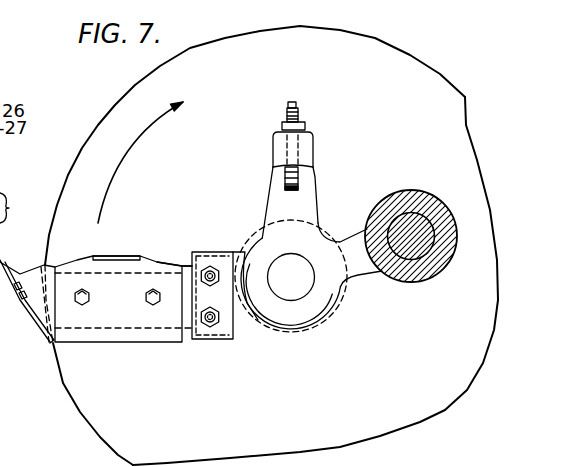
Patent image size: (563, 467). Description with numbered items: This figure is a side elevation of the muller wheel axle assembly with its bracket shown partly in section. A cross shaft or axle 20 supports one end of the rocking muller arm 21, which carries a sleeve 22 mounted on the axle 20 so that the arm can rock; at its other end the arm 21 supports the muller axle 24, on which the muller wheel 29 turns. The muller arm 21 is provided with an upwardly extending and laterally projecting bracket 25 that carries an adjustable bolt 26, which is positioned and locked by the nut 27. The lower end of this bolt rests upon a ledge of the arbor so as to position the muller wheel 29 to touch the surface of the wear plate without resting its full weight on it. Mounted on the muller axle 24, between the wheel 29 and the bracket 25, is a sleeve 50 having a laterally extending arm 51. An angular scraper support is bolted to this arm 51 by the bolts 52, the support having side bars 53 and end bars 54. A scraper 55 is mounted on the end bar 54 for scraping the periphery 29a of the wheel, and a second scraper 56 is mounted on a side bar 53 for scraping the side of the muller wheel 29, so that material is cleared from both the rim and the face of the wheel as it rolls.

The cross shaft or axle 20 is at (437, 274).
The rocking muller arm 21 is at (356, 239).
The sleeve 22 is at (416, 191).
The muller axle 24 is at (302, 290).
The bracket 25 is at (313, 181).
The adjustable bolt 26 is at (299, 109).
The nut 27 is at (305, 125).
The muller wheel 29 is at (130, 93).
The periphery 29a is at (67, 383).
The sleeve 50 is at (345, 292).
The laterally extending arm 51 is at (242, 316).
The bolts 52 is at (209, 328).
The side bars 53 is at (184, 264).
The end bars 54 is at (34, 268).
The scraper 55 is at (38, 331).
The scraper 56 is at (103, 333).